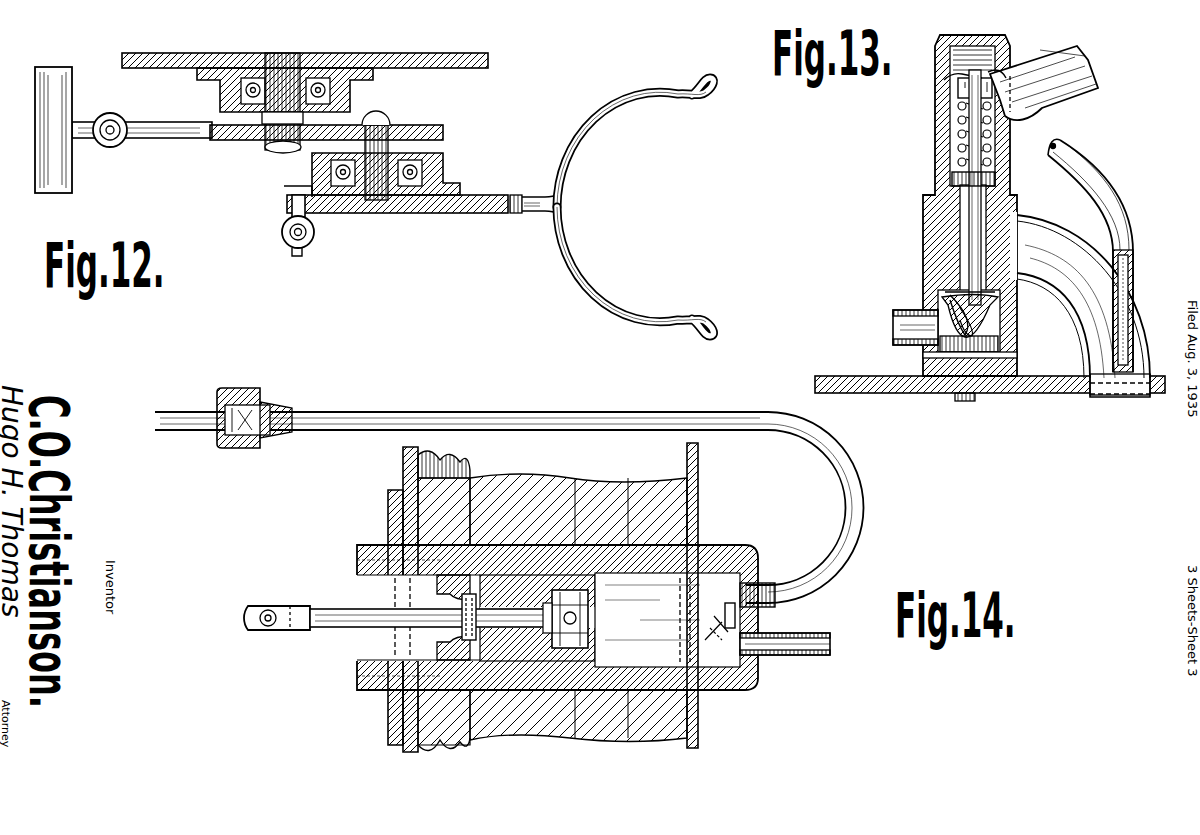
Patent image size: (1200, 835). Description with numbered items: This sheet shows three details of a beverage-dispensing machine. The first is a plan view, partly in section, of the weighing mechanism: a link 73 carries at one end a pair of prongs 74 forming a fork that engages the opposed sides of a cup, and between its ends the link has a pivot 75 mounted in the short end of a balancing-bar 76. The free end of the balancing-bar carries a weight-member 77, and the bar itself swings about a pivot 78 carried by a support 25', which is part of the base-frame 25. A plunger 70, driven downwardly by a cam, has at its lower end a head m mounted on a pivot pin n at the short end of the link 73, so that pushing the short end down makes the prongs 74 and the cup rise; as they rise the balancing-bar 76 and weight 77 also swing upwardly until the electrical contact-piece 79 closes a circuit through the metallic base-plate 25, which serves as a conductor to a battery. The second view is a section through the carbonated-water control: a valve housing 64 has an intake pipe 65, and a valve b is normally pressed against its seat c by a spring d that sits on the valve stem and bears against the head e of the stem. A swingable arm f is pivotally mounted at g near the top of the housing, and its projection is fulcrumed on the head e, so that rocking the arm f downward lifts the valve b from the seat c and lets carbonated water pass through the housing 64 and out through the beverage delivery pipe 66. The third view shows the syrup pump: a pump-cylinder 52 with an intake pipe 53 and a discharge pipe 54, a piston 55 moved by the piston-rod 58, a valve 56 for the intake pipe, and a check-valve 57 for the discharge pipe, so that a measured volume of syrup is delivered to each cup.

In FIG. 12, the support 25' is at (305, 46).
In FIG. 12, the pivot 78 is at (275, 144).
In FIG. 12, the balancing-bar 76 is at (175, 136).
In FIG. 12, the electrical contact-piece 79 is at (116, 118).
In FIG. 12, the weight-member 77 is at (73, 176).
In FIG. 12, the pivot 75 is at (390, 125).
In FIG. 12, the link 73 is at (495, 215).
In FIG. 12, the prongs 74 is at (612, 284).
In FIG. 12, the plunger 70 is at (315, 232).
In FIG. 12, the head m is at (282, 232).
In FIG. 12, the pivot pin n is at (300, 258).
In FIG. 13, the base-plate 25 is at (990, 399).
In FIG. 13, the valve housing 64 is at (930, 240).
In FIG. 13, the pivot g is at (940, 84).
In FIG. 13, the head e is at (948, 108).
In FIG. 13, the spring d is at (950, 165).
In FIG. 13, the swingable arm f is at (1070, 95).
In FIG. 13, the seat c is at (948, 295).
In FIG. 13, the valve b is at (985, 318).
In FIG. 13, the intake pipe 65 is at (890, 325).
In FIG. 13, the discharge pipe 54 is at (1110, 196).
In FIG. 14, the discharge pipe 54 is at (598, 410).
In FIG. 13, the beverage delivery pipe 66 is at (1118, 398).
In FIG. 14, the check-valve 57 is at (275, 406).
In FIG. 14, the pump-cylinder 52 is at (610, 665).
In FIG. 14, the piston-rod 58 is at (322, 632).
In FIG. 14, the piston 55 is at (590, 592).
In FIG. 14, the valve 56 is at (728, 610).
In FIG. 14, the intake pipe 53 is at (800, 660).